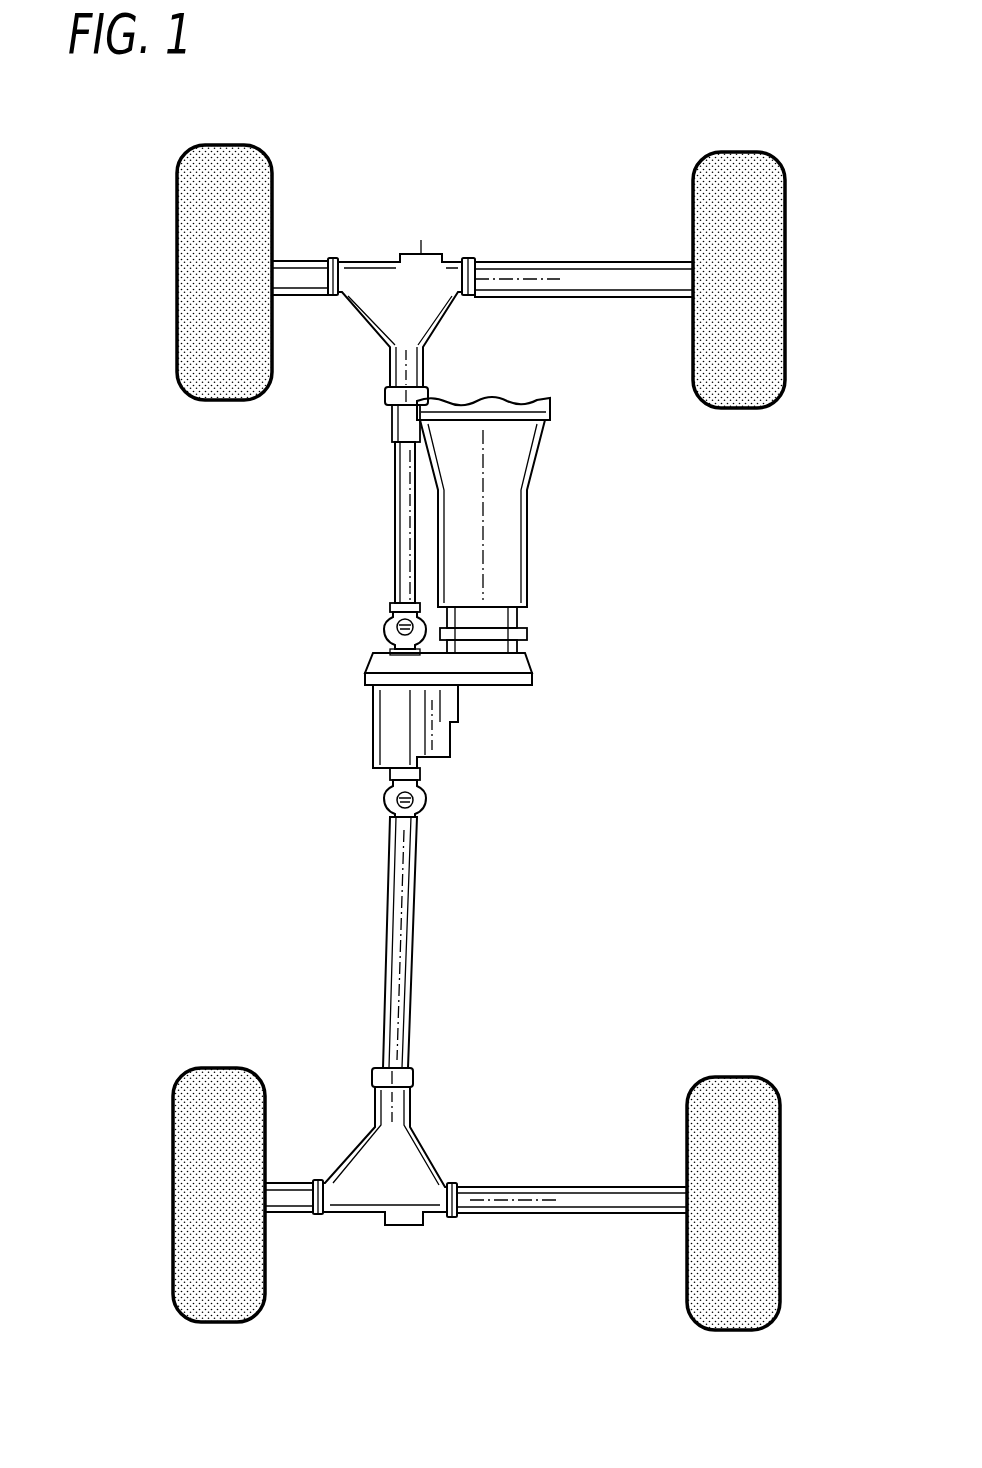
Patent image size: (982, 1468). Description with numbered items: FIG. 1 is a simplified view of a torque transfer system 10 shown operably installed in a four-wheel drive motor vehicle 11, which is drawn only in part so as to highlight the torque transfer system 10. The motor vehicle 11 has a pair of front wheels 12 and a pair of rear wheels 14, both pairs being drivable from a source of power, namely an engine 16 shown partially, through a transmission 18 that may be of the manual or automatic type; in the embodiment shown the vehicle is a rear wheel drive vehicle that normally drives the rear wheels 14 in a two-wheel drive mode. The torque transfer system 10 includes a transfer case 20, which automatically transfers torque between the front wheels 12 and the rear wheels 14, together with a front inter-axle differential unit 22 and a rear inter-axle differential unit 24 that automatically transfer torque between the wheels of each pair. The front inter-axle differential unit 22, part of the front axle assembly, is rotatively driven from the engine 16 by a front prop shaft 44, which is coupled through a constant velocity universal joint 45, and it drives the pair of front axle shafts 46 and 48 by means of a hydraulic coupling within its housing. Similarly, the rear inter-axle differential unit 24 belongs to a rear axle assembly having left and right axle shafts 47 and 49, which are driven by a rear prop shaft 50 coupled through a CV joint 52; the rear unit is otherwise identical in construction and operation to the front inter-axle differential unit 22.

The torque transfer system 10 is at (216, 496).
The motor vehicle 11 is at (551, 113).
The front wheels 12 is at (210, 160).
The rear wheels 14 is at (208, 1075).
The engine 16 is at (550, 403).
The transmission 18 is at (508, 468).
The transfer case 20 is at (445, 745).
The front inter-axle differential unit 22 is at (428, 253).
The rear inter-axle differential unit 24 is at (357, 1200).
The front prop shaft 44 is at (393, 528).
The constant velocity universal joint 45 is at (385, 625).
The axle shaft 46 is at (291, 262).
The left axle shaft 47 is at (273, 1187).
The axle shaft 48 is at (543, 277).
The right axle shaft 49 is at (510, 1190).
The rear prop shaft 50 is at (410, 900).
The CV joint 52 is at (420, 808).